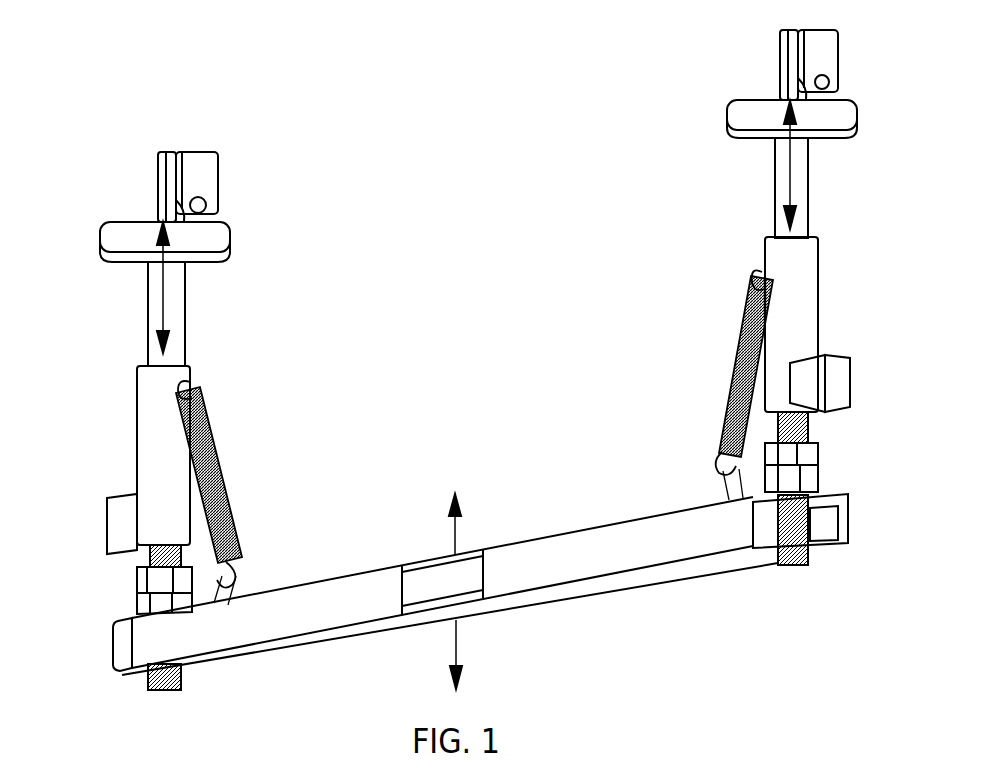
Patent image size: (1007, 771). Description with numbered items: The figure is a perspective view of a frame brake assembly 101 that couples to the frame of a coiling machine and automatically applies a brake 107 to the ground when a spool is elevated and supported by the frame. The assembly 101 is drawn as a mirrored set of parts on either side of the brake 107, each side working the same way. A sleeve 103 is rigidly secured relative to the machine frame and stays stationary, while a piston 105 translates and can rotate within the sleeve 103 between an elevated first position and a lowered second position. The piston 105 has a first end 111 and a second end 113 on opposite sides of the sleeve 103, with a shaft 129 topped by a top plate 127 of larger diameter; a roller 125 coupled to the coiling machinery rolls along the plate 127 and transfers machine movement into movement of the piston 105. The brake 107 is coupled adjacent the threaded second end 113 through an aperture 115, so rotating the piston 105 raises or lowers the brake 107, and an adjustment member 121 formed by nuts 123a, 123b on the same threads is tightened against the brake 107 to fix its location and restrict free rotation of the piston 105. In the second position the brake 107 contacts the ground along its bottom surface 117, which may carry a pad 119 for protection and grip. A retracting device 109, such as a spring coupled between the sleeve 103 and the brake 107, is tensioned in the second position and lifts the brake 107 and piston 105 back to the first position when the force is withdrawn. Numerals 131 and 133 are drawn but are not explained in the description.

The frame brake assembly 101 is at (139, 36).
The sleeve 103 is at (121, 468).
The piston 105 is at (118, 312).
The brake 107 is at (398, 665).
The retracting device 109 is at (248, 497).
The first end 111 is at (724, 75).
The second end 113 is at (813, 592).
The aperture 115 is at (178, 672).
The bottom surface 117 is at (527, 604).
The pad 119 is at (563, 533).
The adjustment member 121 is at (108, 597).
The nut 123a is at (818, 484).
The nut 123b is at (813, 448).
The roller 125 is at (158, 195).
The top plate 127 is at (228, 246).
The shaft 129 is at (773, 185).
The block on right actuator 131 is at (850, 370).
The cylinder body of right actuator 133 is at (815, 311).